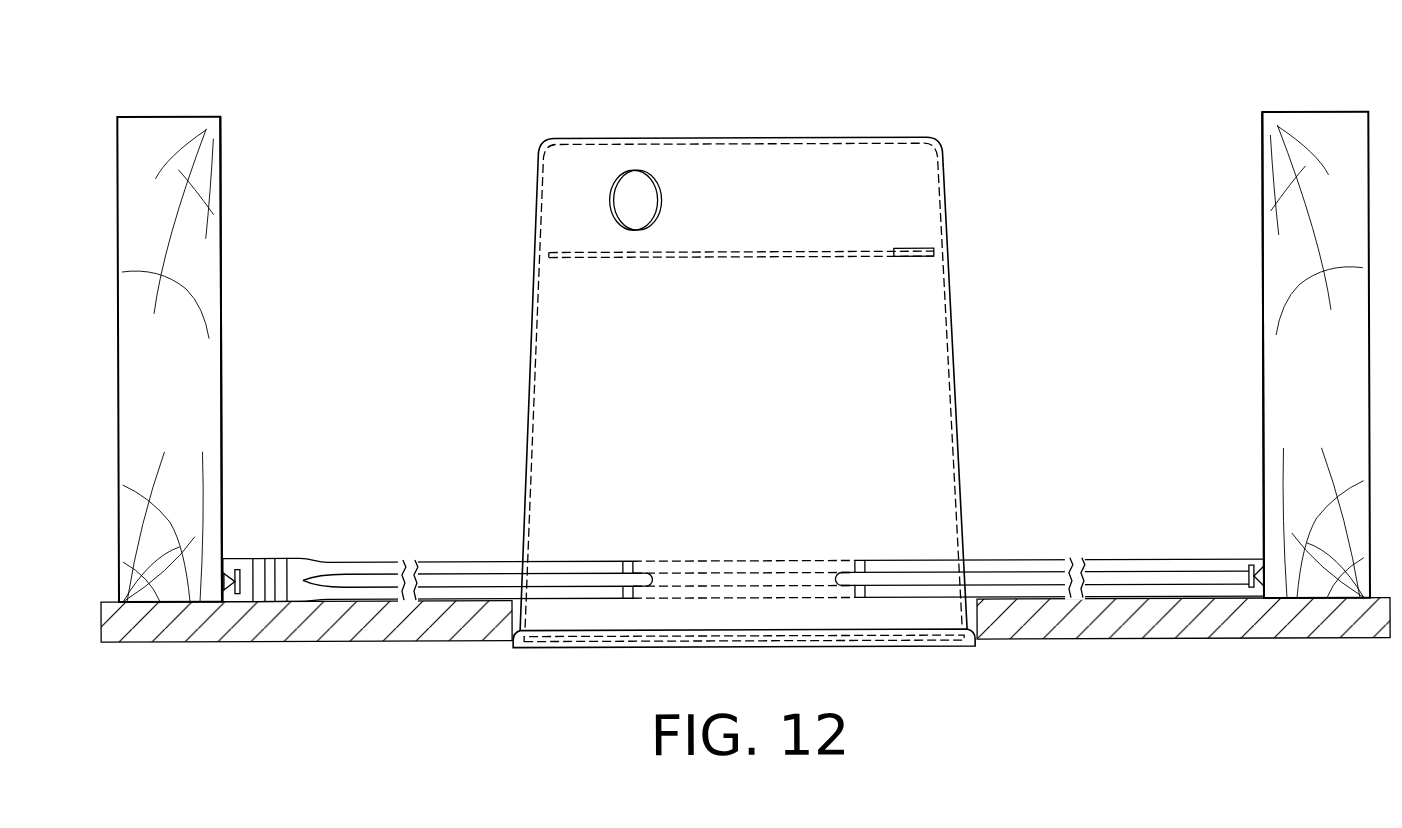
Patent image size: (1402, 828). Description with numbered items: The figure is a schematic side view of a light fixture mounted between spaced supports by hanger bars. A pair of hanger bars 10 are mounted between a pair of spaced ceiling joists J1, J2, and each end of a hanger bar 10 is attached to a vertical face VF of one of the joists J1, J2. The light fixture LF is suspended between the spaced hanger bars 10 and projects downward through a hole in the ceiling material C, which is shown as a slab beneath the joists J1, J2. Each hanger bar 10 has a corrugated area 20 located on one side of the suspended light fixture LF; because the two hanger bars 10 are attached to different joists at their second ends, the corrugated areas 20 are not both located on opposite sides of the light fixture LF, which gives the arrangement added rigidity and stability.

The ceiling joist J1 is at (158, 114).
The ceiling joist J2 is at (1336, 113).
The vertical face VF is at (222, 171).
The light fixture LF is at (533, 338).
The hanger bar 10 is at (247, 554).
The corrugated area 20 is at (268, 579).
The ceiling material C is at (152, 624).